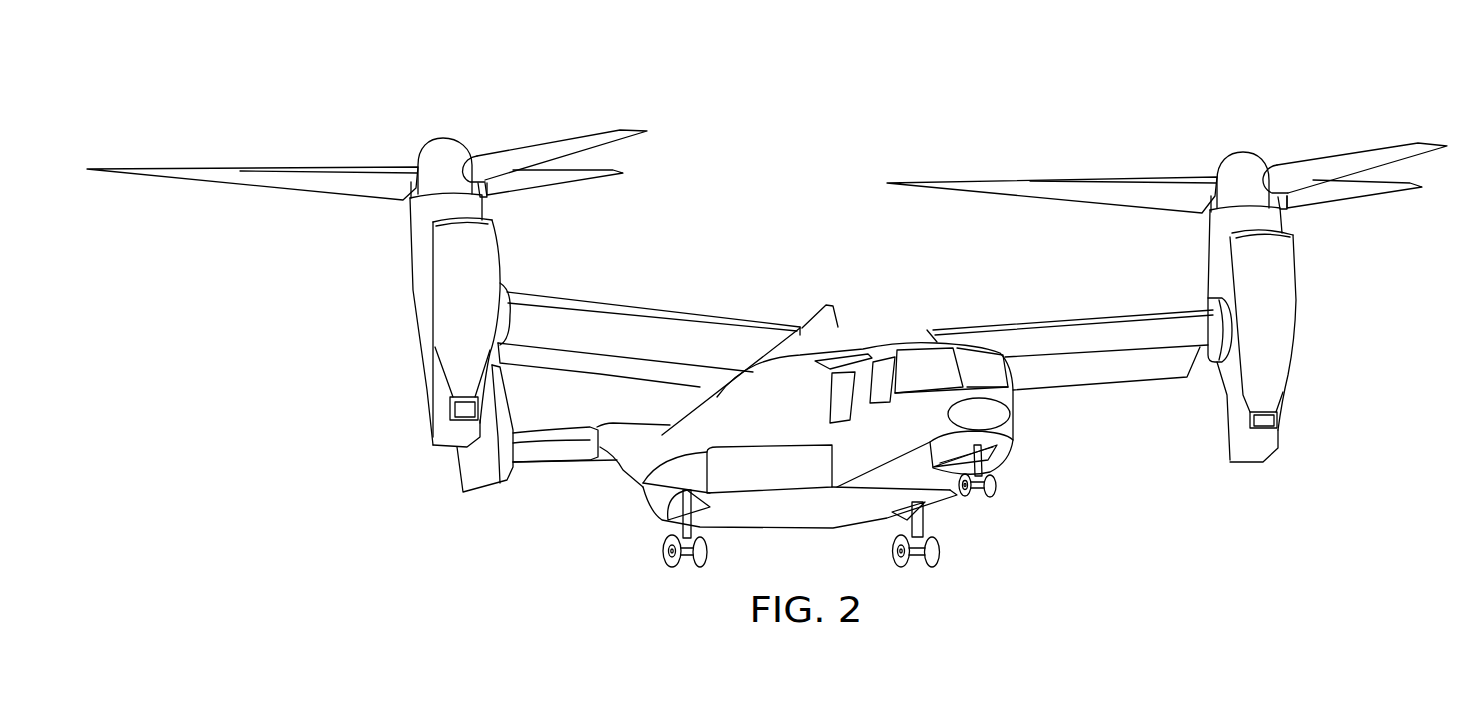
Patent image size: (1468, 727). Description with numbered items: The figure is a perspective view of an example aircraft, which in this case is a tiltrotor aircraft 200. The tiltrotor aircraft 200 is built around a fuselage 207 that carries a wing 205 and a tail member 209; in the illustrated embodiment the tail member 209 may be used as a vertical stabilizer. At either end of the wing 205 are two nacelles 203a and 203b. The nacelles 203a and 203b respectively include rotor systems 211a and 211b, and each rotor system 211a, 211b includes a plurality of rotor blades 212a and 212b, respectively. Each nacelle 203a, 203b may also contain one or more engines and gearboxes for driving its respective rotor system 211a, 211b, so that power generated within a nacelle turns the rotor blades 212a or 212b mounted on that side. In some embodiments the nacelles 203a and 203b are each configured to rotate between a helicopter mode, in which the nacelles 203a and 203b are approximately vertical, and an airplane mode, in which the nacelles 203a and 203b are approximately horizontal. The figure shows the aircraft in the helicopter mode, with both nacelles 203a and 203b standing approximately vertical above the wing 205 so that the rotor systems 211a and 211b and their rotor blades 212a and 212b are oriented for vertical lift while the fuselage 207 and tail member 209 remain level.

The tiltrotor aircraft 200 is at (865, 103).
The nacelle 203a is at (404, 385).
The nacelle 203b is at (1300, 410).
The wing 205 is at (653, 303).
The fuselage 207 is at (1022, 433).
The tail member 209 is at (616, 477).
The rotor system 211a is at (425, 129).
The rotor system 211b is at (1261, 141).
The rotor blades 212a is at (262, 168).
The rotor blades 212b is at (1062, 183).